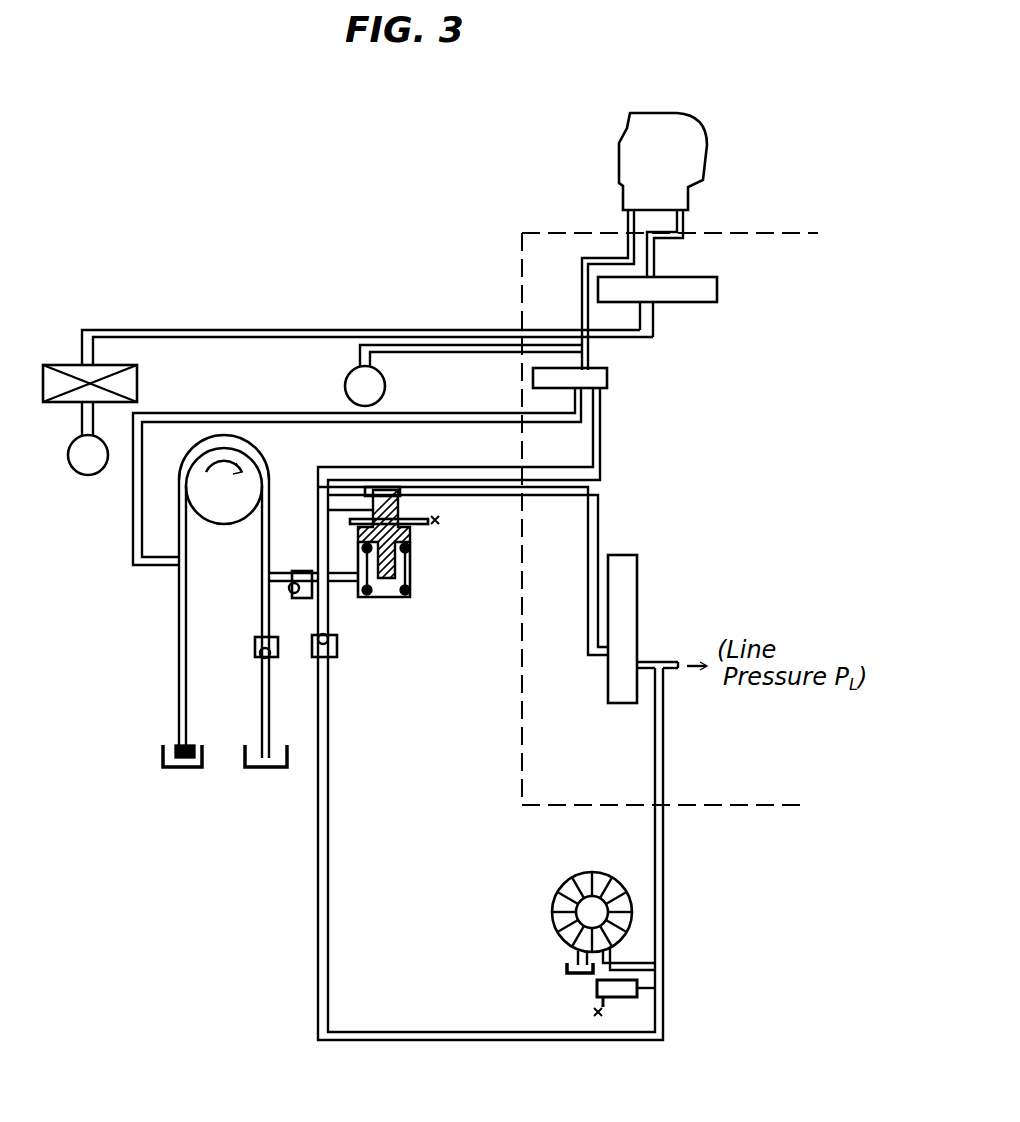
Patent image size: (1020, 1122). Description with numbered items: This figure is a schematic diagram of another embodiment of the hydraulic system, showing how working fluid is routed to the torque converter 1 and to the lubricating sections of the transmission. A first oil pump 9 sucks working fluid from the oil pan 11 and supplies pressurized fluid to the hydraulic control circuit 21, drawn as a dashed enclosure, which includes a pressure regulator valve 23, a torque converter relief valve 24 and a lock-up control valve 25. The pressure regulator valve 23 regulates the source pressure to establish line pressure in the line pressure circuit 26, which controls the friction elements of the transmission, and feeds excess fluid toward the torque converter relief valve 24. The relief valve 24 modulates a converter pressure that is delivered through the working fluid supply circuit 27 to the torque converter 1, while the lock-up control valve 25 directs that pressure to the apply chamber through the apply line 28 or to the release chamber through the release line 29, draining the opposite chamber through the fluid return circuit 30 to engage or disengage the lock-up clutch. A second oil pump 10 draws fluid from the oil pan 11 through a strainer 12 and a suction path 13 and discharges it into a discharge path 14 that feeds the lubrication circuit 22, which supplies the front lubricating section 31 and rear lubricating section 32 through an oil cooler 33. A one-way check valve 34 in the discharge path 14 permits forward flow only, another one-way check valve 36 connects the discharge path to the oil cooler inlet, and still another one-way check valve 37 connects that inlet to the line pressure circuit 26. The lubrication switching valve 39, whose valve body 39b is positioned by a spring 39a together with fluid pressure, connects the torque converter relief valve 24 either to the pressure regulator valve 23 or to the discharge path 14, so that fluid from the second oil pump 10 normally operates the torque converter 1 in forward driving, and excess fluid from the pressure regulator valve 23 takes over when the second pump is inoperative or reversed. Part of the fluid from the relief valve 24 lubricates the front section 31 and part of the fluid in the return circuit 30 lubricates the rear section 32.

The torque converter 1 is at (692, 108).
The first oil pump 9 is at (562, 880).
The second oil pump 10 is at (262, 450).
The oil pan 11 is at (245, 768).
The strainer 12 is at (178, 742).
The suction path 13 is at (180, 610).
The discharge path 14 is at (262, 555).
The hydraulic control circuit 21 is at (760, 808).
The lubrication circuit 22 is at (335, 372).
The pressure regulator valve 23 is at (637, 597).
The torque converter relief valve 24 is at (610, 378).
The lock-up control valve 25 is at (717, 290).
The line pressure circuit 26 is at (665, 752).
The working fluid supply circuit 27 is at (582, 302).
The apply line 28 is at (685, 243).
The release line 29 is at (627, 243).
The fluid return circuit 30 is at (640, 335).
The front lubricating section 31 is at (345, 388).
The rear lubricating section 32 is at (88, 476).
The oil cooler 33 is at (137, 390).
The one-way check valve 34 is at (255, 650).
The one-way check valve 36 is at (298, 571).
The one-way check valve 37 is at (337, 648).
The lubrication switching valve 39 is at (415, 560).
The spring 39a is at (412, 577).
The valve body 39b is at (408, 532).